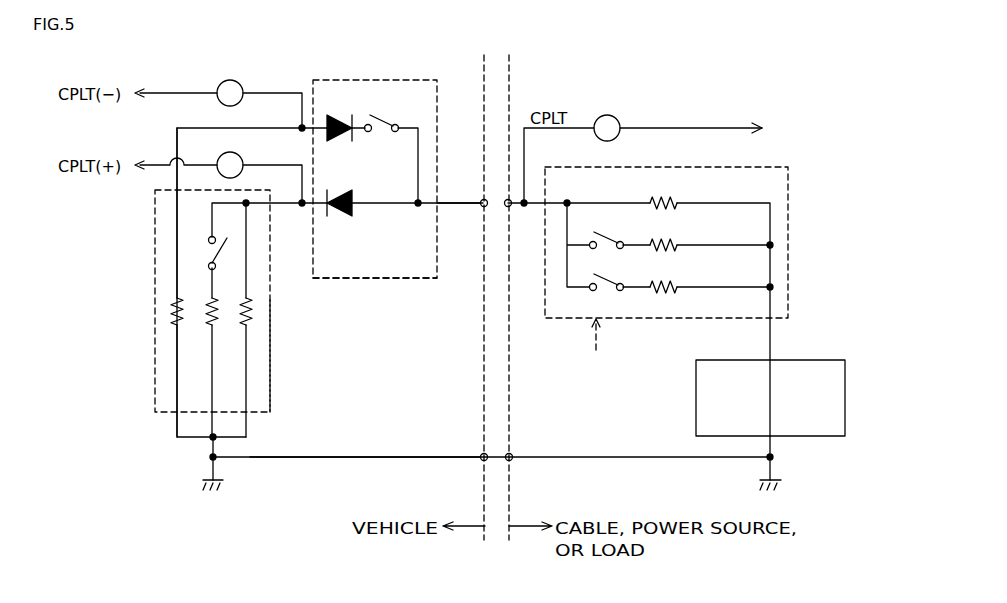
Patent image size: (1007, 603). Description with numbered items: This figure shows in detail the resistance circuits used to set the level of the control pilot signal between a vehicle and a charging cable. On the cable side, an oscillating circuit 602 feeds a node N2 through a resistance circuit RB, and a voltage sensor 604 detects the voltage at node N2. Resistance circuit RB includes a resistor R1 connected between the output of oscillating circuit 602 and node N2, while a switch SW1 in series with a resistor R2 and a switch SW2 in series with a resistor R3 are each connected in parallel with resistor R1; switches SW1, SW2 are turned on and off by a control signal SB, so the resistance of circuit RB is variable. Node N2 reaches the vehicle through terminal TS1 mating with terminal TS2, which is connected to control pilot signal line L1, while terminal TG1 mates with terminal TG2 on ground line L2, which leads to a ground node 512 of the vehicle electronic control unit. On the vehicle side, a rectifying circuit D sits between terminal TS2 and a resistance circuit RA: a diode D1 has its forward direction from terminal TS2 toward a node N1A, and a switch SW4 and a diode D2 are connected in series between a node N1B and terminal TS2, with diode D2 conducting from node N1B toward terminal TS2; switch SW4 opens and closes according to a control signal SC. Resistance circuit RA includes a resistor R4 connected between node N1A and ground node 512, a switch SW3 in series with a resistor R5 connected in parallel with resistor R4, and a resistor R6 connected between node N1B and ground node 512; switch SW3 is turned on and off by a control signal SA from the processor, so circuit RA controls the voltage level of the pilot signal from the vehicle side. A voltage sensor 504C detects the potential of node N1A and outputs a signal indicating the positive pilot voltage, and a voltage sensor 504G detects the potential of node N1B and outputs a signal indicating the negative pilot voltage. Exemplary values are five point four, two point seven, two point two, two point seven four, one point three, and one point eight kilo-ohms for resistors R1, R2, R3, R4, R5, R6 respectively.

The voltage sensor 504G is at (245, 83).
The voltage sensor 504C is at (245, 155).
The voltage sensor 604 is at (616, 118).
The oscillating circuit 602 is at (715, 358).
The ground node 512 is at (212, 495).
The node N1A is at (302, 208).
The node N1B is at (299, 126).
The node N2 is at (526, 200).
The diode D1 is at (341, 218).
The diode D2 is at (341, 144).
The rectifying circuit D is at (412, 281).
The switch SW1 is at (600, 232).
The switch SW2 is at (600, 274).
The switch SW3 is at (206, 252).
The switch SW4 is at (376, 115).
The resistor R1 is at (655, 198).
The resistor R2 is at (657, 240).
The resistor R3 is at (657, 282).
The resistor R4 is at (253, 305).
The resistor R5 is at (218, 325).
The resistor R6 is at (171, 311).
The resistance circuit RA is at (271, 378).
The resistance circuit RB is at (756, 168).
The control signal SA is at (154, 220).
The control signal SB is at (593, 348).
The control signal SC is at (376, 79).
The control pilot signal line L1 is at (452, 208).
The ground line L2 is at (437, 461).
The terminal TS1 is at (509, 208).
The terminal TS2 is at (483, 208).
The terminal TG1 is at (513, 453).
The terminal TG2 is at (481, 453).